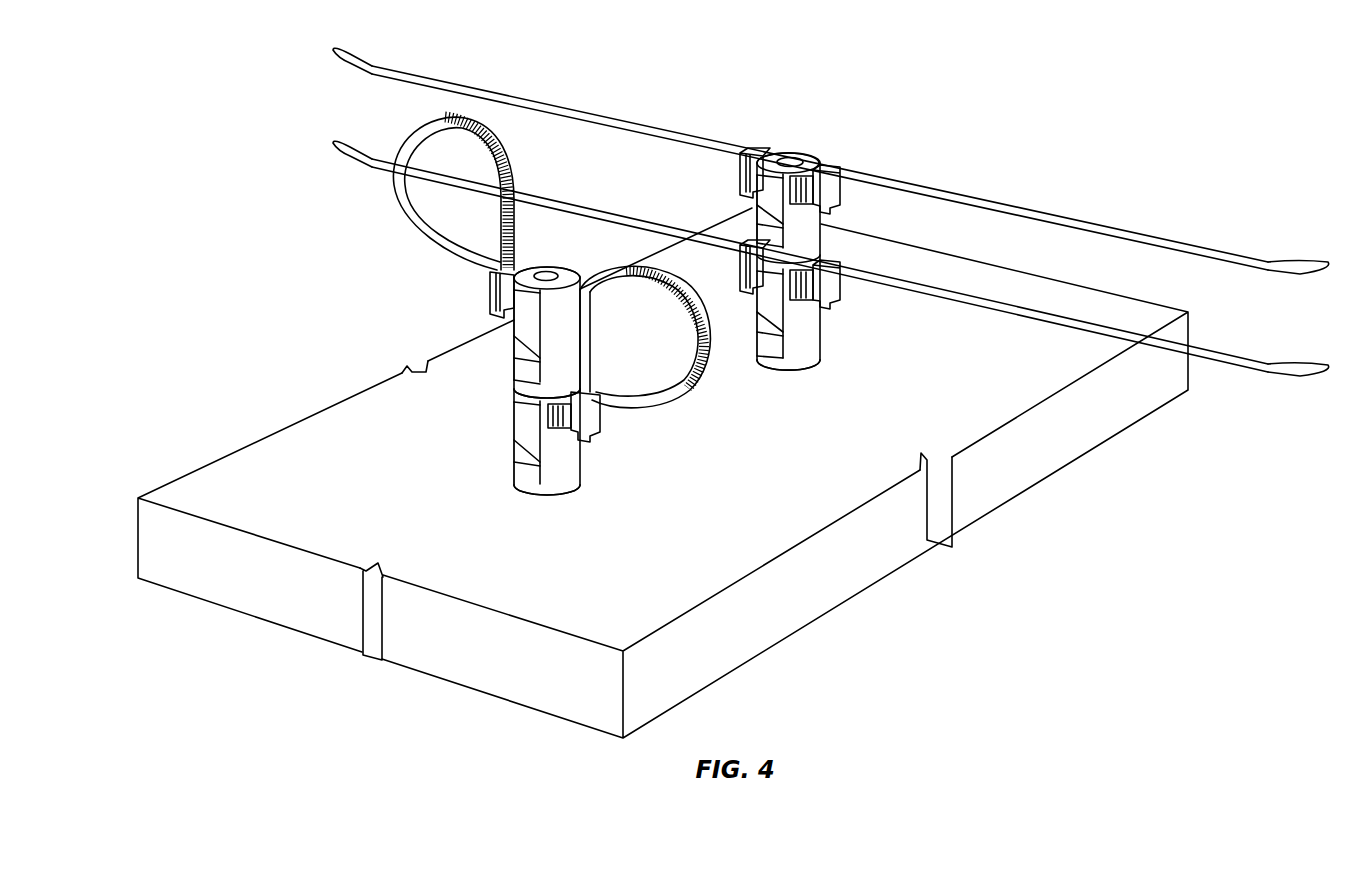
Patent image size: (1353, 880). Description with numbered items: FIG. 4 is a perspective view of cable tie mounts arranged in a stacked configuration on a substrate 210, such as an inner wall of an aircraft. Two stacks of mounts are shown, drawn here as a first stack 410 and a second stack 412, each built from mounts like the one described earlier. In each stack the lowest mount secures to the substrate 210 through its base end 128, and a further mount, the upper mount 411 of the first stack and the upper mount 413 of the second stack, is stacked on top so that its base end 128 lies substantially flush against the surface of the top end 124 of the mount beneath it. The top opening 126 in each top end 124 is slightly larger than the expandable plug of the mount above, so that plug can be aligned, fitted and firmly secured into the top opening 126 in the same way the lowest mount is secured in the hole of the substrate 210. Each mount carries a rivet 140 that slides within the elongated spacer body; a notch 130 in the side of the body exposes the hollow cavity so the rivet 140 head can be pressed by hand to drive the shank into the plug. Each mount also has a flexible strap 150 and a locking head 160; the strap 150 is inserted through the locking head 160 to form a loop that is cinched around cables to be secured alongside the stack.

The top end 124 is at (572, 272).
The top opening 126 is at (546, 274).
The base end 128 is at (549, 390).
The notch 130 is at (517, 362).
The rivet 140 is at (520, 337).
The strap 150 is at (556, 106).
The locking head 160 is at (490, 280).
The substrate 210 is at (743, 553).
The first mounting post assembly 410 is at (485, 445).
The upper post segment 411 is at (485, 318).
The second mounting post assembly 412 is at (834, 344).
The upper post segment of second assembly 413 is at (852, 241).